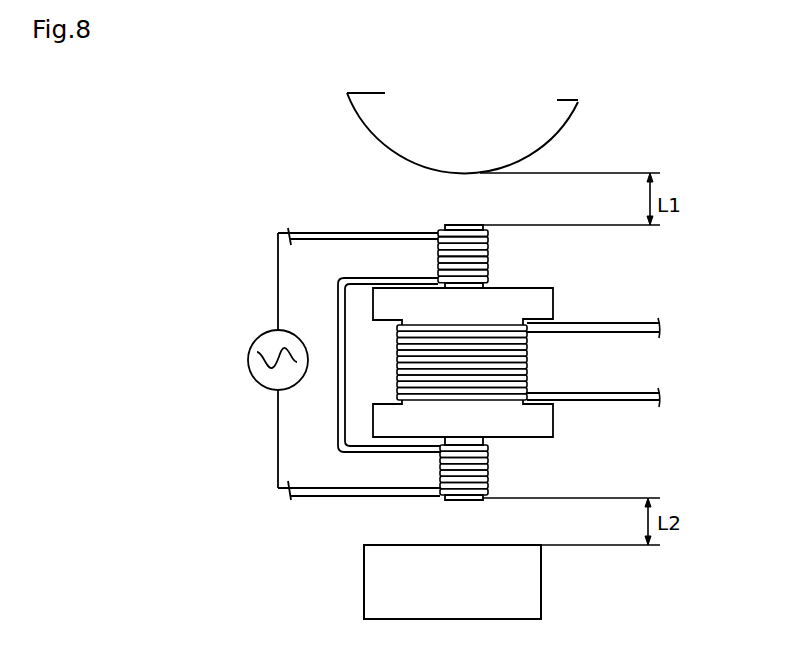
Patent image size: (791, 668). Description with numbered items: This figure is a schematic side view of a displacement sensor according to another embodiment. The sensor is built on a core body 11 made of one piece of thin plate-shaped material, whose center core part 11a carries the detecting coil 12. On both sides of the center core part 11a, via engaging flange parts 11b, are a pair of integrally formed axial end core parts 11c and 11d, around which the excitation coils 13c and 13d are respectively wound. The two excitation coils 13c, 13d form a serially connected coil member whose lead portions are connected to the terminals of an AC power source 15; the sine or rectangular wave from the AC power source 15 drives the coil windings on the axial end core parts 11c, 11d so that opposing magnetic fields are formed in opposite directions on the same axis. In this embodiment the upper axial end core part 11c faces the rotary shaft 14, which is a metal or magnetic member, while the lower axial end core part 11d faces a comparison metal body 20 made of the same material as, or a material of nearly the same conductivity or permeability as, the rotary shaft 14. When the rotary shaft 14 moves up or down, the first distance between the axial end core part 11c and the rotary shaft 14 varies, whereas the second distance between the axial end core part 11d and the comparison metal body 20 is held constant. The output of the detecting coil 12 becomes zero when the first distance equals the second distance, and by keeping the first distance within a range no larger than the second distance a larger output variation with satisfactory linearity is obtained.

The core body 11 is at (474, 360).
The center core part 11a is at (473, 366).
The engaging flange parts 11b is at (540, 297).
The axial end core part 11c is at (460, 226).
The axial end core part 11d is at (463, 498).
The detecting coil 12 is at (617, 323).
The excitation coil 13c is at (450, 253).
The excitation coil 13d is at (453, 470).
The rotary shaft 14 is at (560, 127).
The AC power source 15 is at (258, 343).
The comparison metal body 20 is at (382, 563).